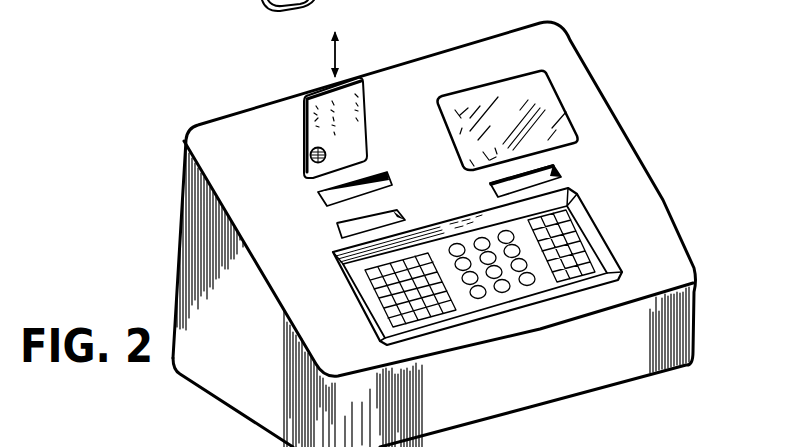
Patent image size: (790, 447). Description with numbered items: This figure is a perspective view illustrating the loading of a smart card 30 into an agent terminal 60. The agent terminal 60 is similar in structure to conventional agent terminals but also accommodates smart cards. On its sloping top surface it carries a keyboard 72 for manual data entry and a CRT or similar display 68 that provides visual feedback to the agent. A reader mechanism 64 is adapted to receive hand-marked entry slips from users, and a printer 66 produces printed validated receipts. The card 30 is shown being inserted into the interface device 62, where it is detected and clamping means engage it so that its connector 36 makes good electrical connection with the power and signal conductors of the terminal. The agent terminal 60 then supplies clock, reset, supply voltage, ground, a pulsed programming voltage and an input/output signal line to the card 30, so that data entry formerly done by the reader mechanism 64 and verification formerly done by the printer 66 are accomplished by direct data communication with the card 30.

The card 30 is at (349, 91).
The connector 36 is at (309, 152).
The agent terminal 60 is at (549, 23).
The interface device 62 is at (318, 194).
The reader mechanism 64 is at (396, 213).
The printer 66 is at (550, 171).
The display 68 is at (533, 105).
The keyboard 72 is at (614, 246).